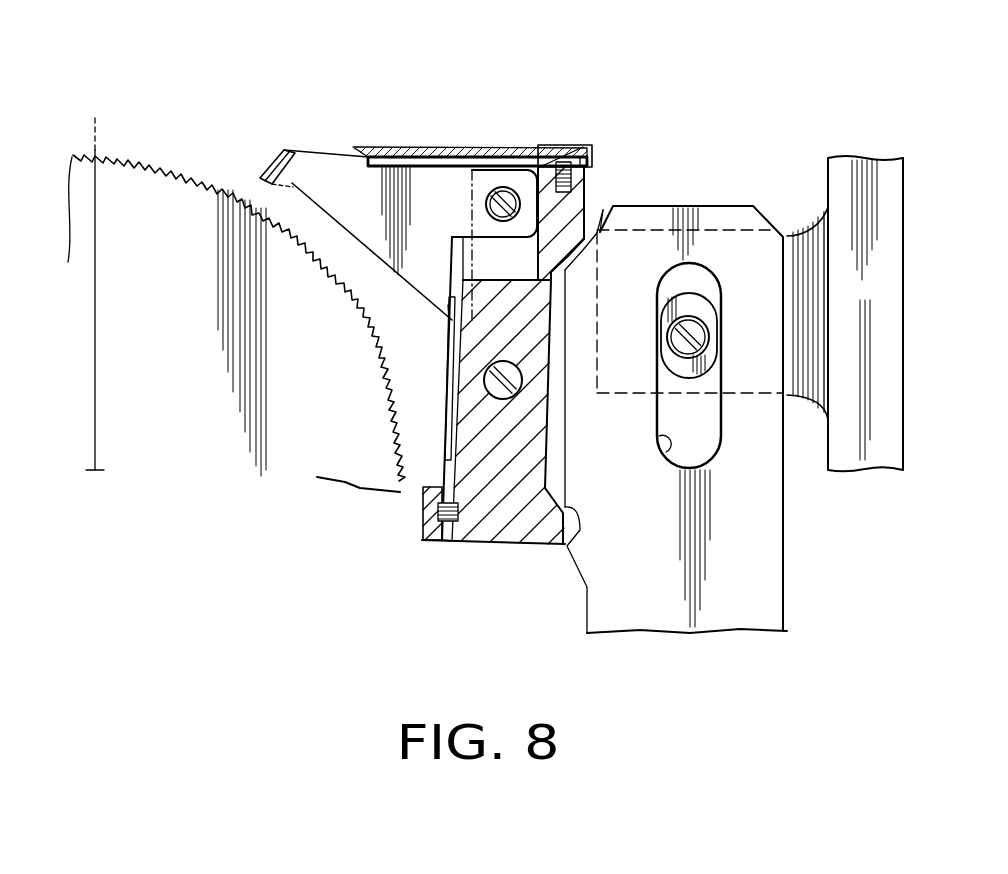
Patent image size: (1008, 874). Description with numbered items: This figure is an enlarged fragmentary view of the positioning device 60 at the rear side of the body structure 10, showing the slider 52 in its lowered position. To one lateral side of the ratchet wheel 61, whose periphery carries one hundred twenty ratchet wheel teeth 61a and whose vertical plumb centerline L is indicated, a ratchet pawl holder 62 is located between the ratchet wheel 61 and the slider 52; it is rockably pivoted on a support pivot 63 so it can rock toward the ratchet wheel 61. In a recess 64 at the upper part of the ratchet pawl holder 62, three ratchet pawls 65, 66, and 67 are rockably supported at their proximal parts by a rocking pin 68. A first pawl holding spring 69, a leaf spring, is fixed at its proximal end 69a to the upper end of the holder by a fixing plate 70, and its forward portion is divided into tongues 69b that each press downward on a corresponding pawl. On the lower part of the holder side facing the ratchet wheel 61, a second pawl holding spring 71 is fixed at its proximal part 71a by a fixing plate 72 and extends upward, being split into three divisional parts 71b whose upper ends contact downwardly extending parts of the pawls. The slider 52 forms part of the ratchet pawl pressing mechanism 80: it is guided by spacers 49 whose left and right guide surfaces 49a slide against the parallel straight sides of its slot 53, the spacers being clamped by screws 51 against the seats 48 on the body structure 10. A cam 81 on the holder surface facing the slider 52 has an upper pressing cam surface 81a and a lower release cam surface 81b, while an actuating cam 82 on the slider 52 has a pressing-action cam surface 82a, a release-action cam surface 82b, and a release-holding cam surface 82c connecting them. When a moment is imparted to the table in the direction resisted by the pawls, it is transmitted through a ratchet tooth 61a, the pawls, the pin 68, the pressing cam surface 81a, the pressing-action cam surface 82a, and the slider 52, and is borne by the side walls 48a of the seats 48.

The body structure 10 is at (862, 472).
The seats 48 is at (780, 270).
The side walls of the seats 48a is at (779, 292).
The spacer 49 is at (707, 303).
The guide surfaces 49a is at (661, 337).
The screws 51 is at (690, 322).
The slider 52 is at (777, 603).
The slot 53 is at (660, 452).
The positioning device 60 is at (432, 318).
The ratchet wheel 61 is at (236, 304).
The ratchet wheel teeth 61a is at (192, 172).
The ratchet pawl holder 62 is at (488, 543).
The support pivot 63 is at (492, 380).
The recess 64 is at (490, 273).
The ratchet pawl 65 is at (262, 165).
The ratchet pawl 66 is at (288, 152).
The ratchet pawl 67 is at (296, 170).
The rocking pin 68 is at (501, 187).
The first pawl holding spring 69 is at (443, 152).
The proximal end of first pawl holding spring 69a is at (583, 160).
The spring tongues 69b is at (387, 148).
The fixing plate 70 is at (564, 144).
The second pawl holding spring 71 is at (448, 333).
The proximal part of second pawl holding spring 71a is at (440, 543).
The divisional parts 71b is at (445, 408).
The fixing plate 72 is at (420, 545).
The ratchet pawl pressing mechanism 80 is at (540, 401).
The cam 81 is at (550, 480).
The pressing cam surface 81a is at (603, 210).
The release cam surface 81b is at (578, 557).
The actuating cam 82 is at (555, 424).
The pressing-action cam surface 82a is at (601, 232).
The release-action cam surface 82b is at (580, 560).
The release-holding cam surface 82c is at (448, 312).
The vertical centerline L is at (95, 277).